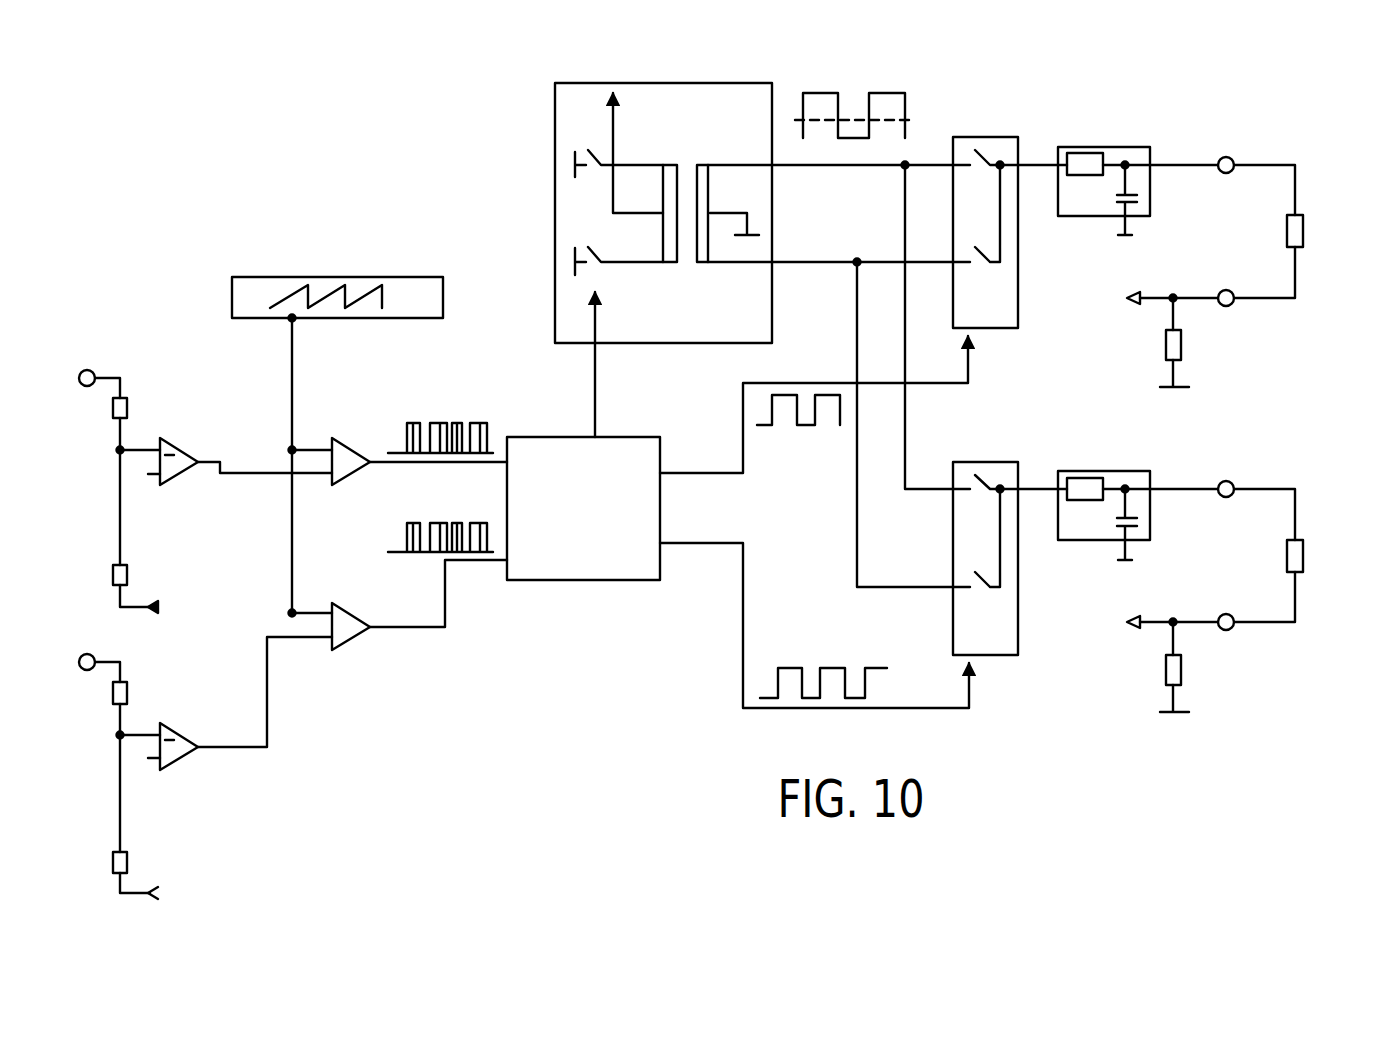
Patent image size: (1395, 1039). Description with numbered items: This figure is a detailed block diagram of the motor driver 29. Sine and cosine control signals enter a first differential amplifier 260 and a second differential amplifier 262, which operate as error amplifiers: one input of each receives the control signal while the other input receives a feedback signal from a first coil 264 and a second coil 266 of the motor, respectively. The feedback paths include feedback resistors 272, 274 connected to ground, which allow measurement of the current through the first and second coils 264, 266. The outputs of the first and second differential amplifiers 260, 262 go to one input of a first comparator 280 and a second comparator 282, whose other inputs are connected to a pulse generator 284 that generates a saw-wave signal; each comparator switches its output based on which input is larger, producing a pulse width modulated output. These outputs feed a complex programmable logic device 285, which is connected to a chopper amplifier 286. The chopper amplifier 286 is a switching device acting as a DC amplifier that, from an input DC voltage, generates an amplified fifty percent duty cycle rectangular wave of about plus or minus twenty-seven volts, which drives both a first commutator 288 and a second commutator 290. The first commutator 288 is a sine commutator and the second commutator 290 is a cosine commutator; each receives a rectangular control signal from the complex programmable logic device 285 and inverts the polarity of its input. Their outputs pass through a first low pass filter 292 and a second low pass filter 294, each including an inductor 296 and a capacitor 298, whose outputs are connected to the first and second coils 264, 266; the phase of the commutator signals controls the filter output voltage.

The motor driver 29 is at (152, 78).
The first differential amplifier 260 is at (180, 448).
The second differential amplifier 262 is at (180, 733).
The first coil 264 is at (1303, 230).
The second coil 266 is at (1303, 555).
The feedback resistor 272 is at (1166, 345).
The feedback resistor 274 is at (1166, 668).
The first comparator 280 is at (353, 450).
The second comparator 282 is at (352, 638).
The pulse generator 284 is at (335, 277).
The complex programmable logic device 285 is at (582, 437).
The chopper amplifier 286 is at (555, 212).
The first commutator 288 is at (1012, 320).
The second commutator 290 is at (958, 540).
The first low pass filter 292 is at (1135, 147).
The second low pass filter 294 is at (1135, 471).
The inductor 296 is at (1082, 176).
The capacitor 298 is at (1137, 198).